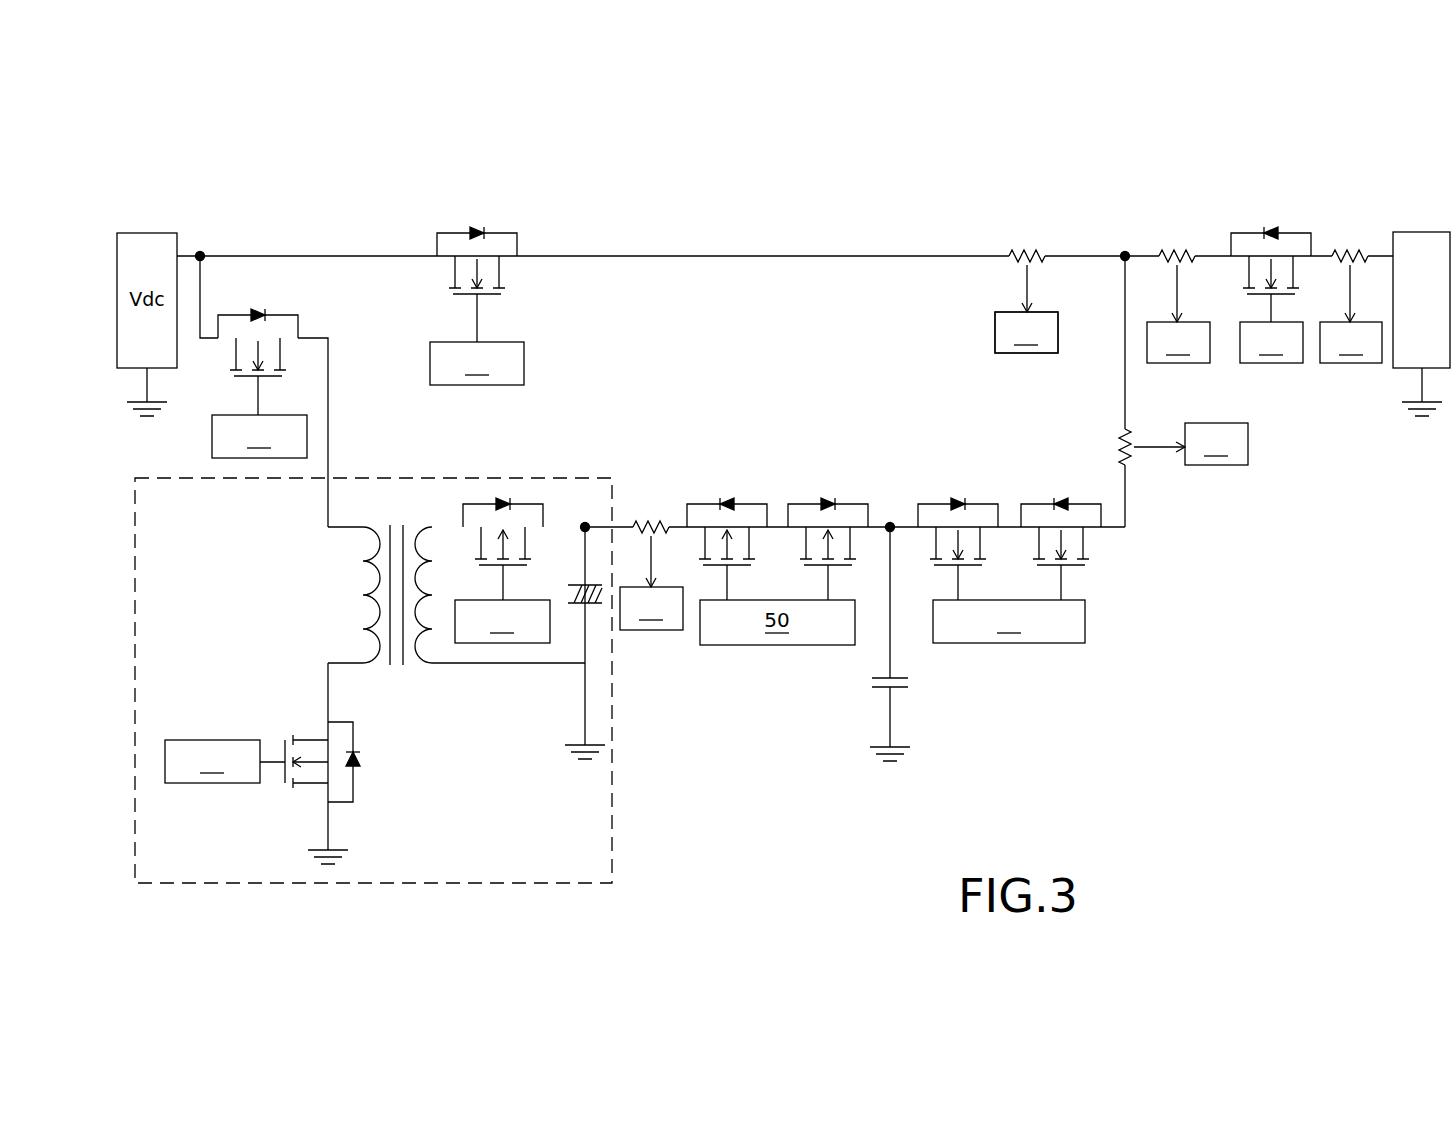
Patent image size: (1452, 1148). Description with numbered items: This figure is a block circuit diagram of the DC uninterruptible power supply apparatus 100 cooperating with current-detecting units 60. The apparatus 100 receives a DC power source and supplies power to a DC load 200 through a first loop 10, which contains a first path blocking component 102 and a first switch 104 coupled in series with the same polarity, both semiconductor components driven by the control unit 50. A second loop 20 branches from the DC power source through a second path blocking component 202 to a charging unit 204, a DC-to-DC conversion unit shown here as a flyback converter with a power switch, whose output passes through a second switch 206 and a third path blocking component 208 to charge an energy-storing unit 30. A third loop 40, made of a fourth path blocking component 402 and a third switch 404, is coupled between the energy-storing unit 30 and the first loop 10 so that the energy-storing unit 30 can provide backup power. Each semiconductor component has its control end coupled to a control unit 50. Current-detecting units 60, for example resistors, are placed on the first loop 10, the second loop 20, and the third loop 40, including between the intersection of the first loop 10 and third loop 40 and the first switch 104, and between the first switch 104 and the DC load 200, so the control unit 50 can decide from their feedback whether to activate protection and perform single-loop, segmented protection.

The first loop 10 is at (858, 185).
The DC uninterruptible power supply apparatus 100 is at (712, 157).
The first path blocking component 102 is at (507, 223).
The first switch 104 is at (1271, 276).
The second loop 20 is at (558, 470).
The second path blocking component 202 is at (283, 309).
The charging unit 204 is at (585, 840).
The second switch 206 is at (725, 492).
The third path blocking component 208 is at (832, 492).
The energy-storing unit 30 is at (850, 712).
The third loop 40 is at (989, 479).
The fourth path blocking component 402 is at (958, 487).
The third switch 404 is at (1060, 490).
The control unit 50 is at (1026, 332).
The current-detecting unit 60 is at (1025, 243).
The DC load 200 is at (1404, 311).